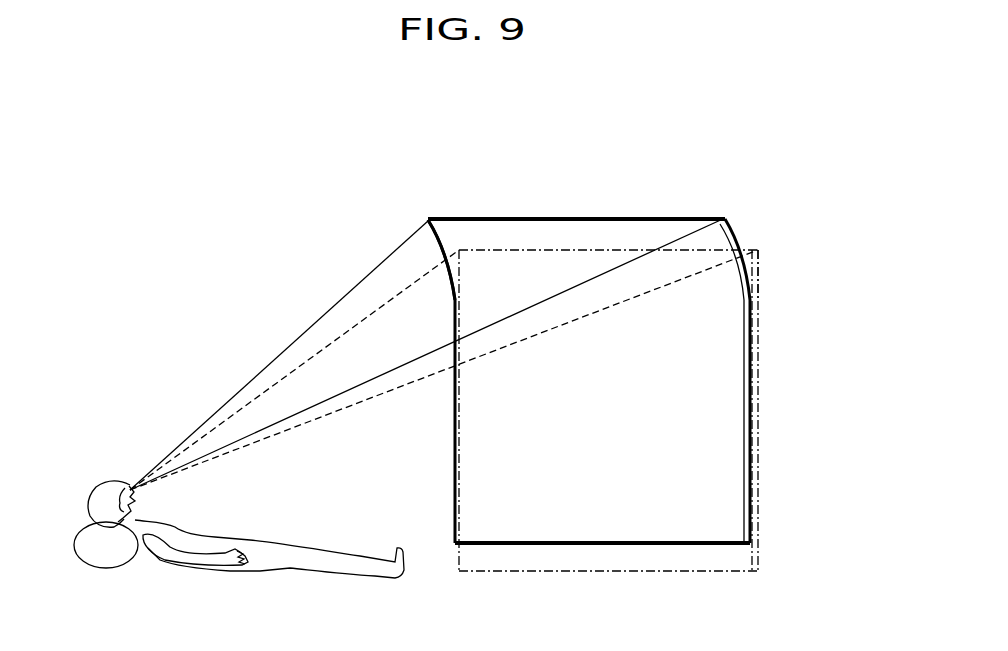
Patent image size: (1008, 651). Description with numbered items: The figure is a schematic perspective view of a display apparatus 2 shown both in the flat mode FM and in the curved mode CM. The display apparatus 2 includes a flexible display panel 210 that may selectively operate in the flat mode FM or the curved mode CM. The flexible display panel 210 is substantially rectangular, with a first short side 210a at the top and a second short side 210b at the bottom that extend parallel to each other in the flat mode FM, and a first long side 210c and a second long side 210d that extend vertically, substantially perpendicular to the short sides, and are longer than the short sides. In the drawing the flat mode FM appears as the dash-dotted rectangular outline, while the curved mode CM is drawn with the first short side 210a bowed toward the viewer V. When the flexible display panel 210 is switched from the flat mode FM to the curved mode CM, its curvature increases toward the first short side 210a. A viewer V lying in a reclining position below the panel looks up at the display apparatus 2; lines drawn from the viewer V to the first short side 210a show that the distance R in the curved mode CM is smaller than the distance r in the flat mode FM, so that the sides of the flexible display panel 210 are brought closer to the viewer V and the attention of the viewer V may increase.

The display apparatus 2 is at (612, 344).
The flexible display panel 210 is at (612, 394).
The first short side 210a is at (606, 248).
The second short side 210b is at (607, 573).
The first long side 210c is at (455, 467).
The second long side 210d is at (758, 463).
The curved mode CM is at (430, 240).
The flat mode FM is at (760, 268).
The distance between viewer and first short side in curved mode R is at (315, 322).
The distance between viewer and first short side in flat mode r is at (385, 308).
The viewer V is at (93, 494).